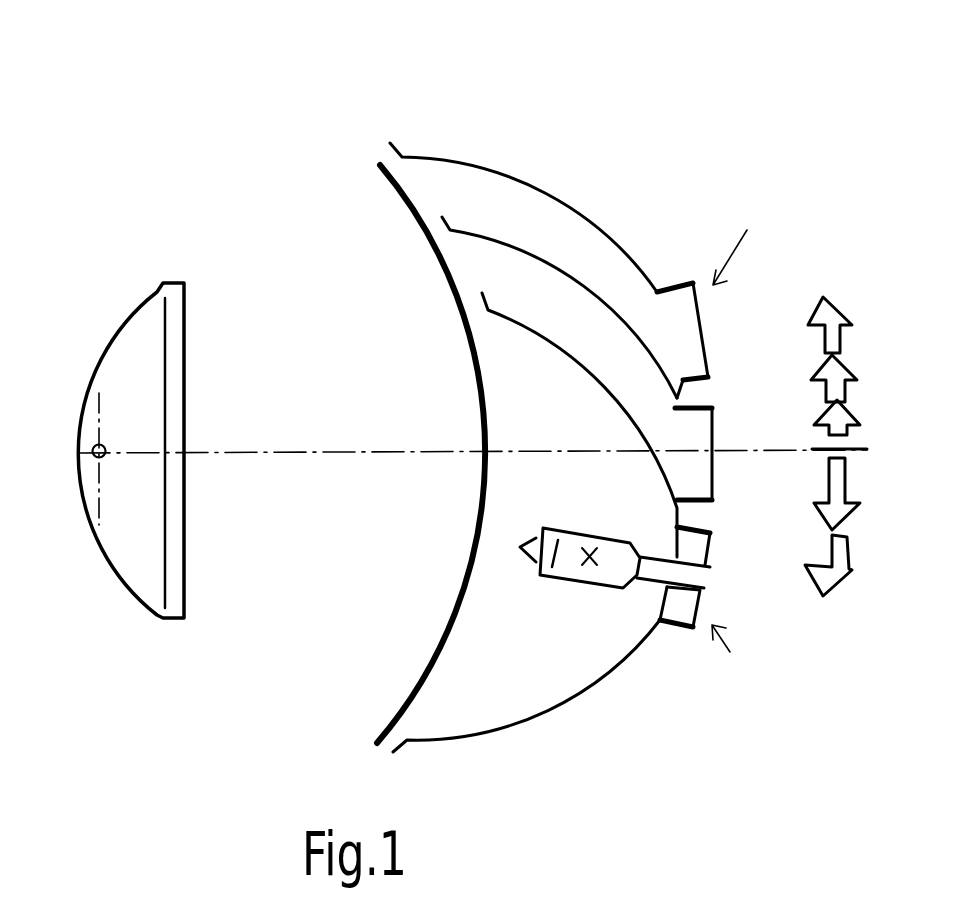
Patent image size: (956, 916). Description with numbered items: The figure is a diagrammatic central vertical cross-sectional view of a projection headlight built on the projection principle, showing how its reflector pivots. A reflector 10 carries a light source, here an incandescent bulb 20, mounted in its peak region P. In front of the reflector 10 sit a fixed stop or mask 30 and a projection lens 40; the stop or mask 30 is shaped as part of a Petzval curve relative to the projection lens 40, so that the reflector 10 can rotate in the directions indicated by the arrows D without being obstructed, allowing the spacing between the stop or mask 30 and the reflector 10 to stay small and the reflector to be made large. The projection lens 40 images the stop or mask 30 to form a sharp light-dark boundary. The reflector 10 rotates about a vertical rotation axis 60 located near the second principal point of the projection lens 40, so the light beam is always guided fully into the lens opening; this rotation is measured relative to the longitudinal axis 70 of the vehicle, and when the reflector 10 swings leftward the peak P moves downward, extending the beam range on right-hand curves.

The reflector 10 is at (617, 233).
The incandescent bulb 20 is at (612, 570).
The stop or mask 30 is at (383, 167).
The projection lens 40 is at (143, 330).
The vertical rotation axis 60 is at (95, 457).
The longitudinal axis 70 is at (332, 453).
The peak region P is at (753, 440).
The arrows indicating rotation directions D is at (845, 445).